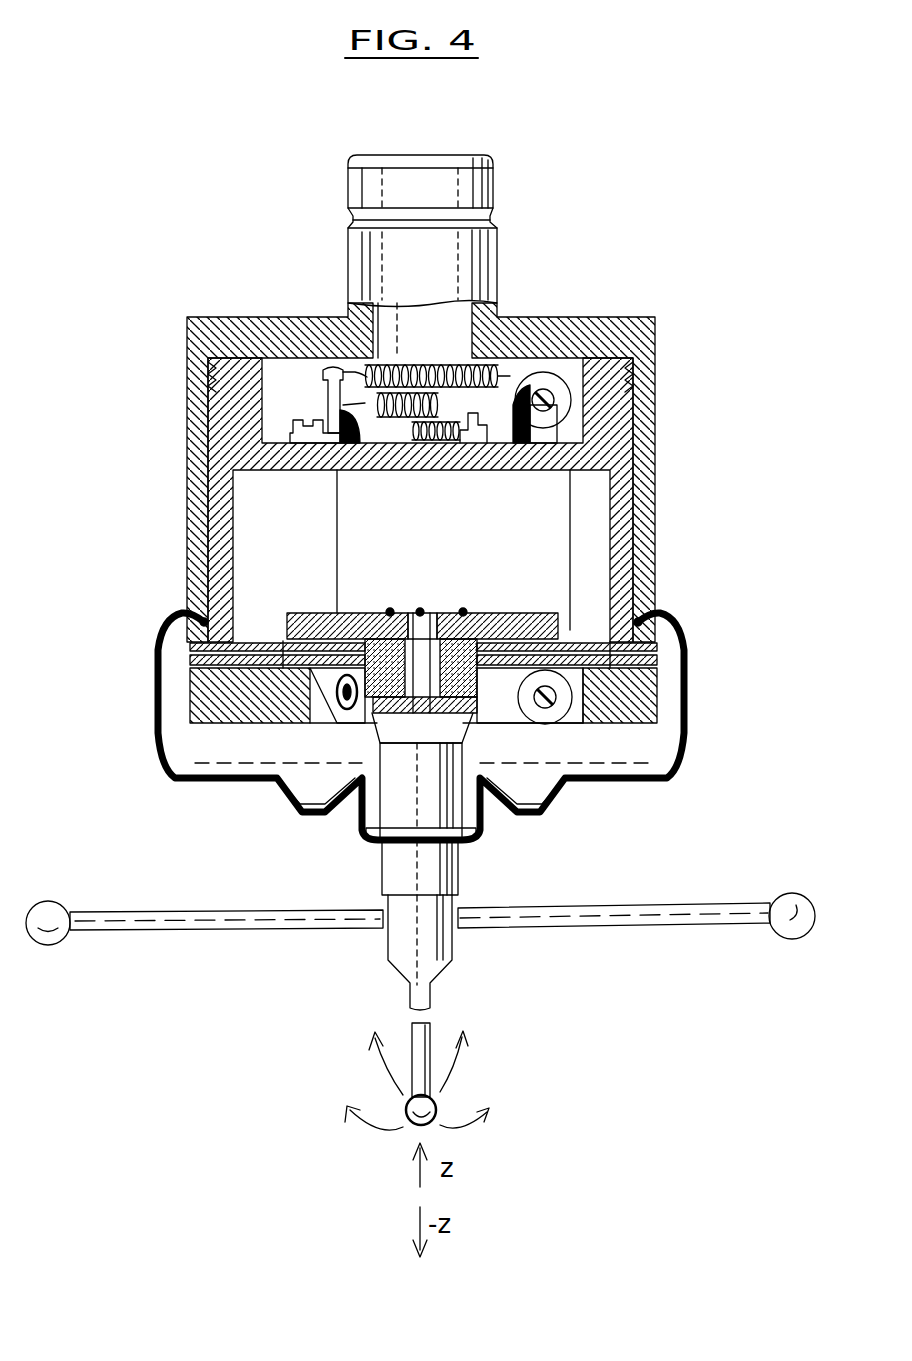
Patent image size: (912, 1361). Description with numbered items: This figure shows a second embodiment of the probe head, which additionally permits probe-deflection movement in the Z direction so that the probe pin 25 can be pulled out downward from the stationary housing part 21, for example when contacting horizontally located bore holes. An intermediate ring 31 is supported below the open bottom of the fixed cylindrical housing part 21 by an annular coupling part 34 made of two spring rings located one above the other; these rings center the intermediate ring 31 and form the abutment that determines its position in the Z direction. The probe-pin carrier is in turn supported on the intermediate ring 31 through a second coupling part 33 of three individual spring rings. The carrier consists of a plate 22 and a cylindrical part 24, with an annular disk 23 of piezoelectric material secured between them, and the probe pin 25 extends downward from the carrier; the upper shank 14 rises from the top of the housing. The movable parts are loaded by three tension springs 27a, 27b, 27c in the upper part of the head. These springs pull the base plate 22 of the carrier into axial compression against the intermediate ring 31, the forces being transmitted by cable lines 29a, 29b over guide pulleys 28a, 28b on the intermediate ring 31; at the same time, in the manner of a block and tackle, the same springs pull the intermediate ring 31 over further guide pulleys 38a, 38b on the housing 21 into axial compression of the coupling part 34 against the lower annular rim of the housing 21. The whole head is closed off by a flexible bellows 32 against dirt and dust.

The spindle shank 14 is at (482, 182).
The stationary housing part 21 is at (215, 556).
The plate 22 is at (302, 613).
The annular disk 23 is at (390, 610).
The cylindrical part 24 is at (458, 868).
The probe pin 25 is at (455, 958).
The tension spring 27a is at (496, 365).
The tension spring 27b is at (330, 378).
The tension spring 27c is at (463, 610).
The guide pulley 28a is at (548, 723).
The guide pulley 28b is at (345, 722).
The cable line 29a is at (570, 560).
The cable line 29b is at (337, 560).
The intermediate ring 31 is at (240, 725).
The flexible bellows 32 is at (695, 670).
The second coupling part 33 is at (283, 645).
The annular coupling part 34 is at (187, 658).
The guide pulley 38a is at (377, 470).
The guide pulley 38b is at (512, 470).